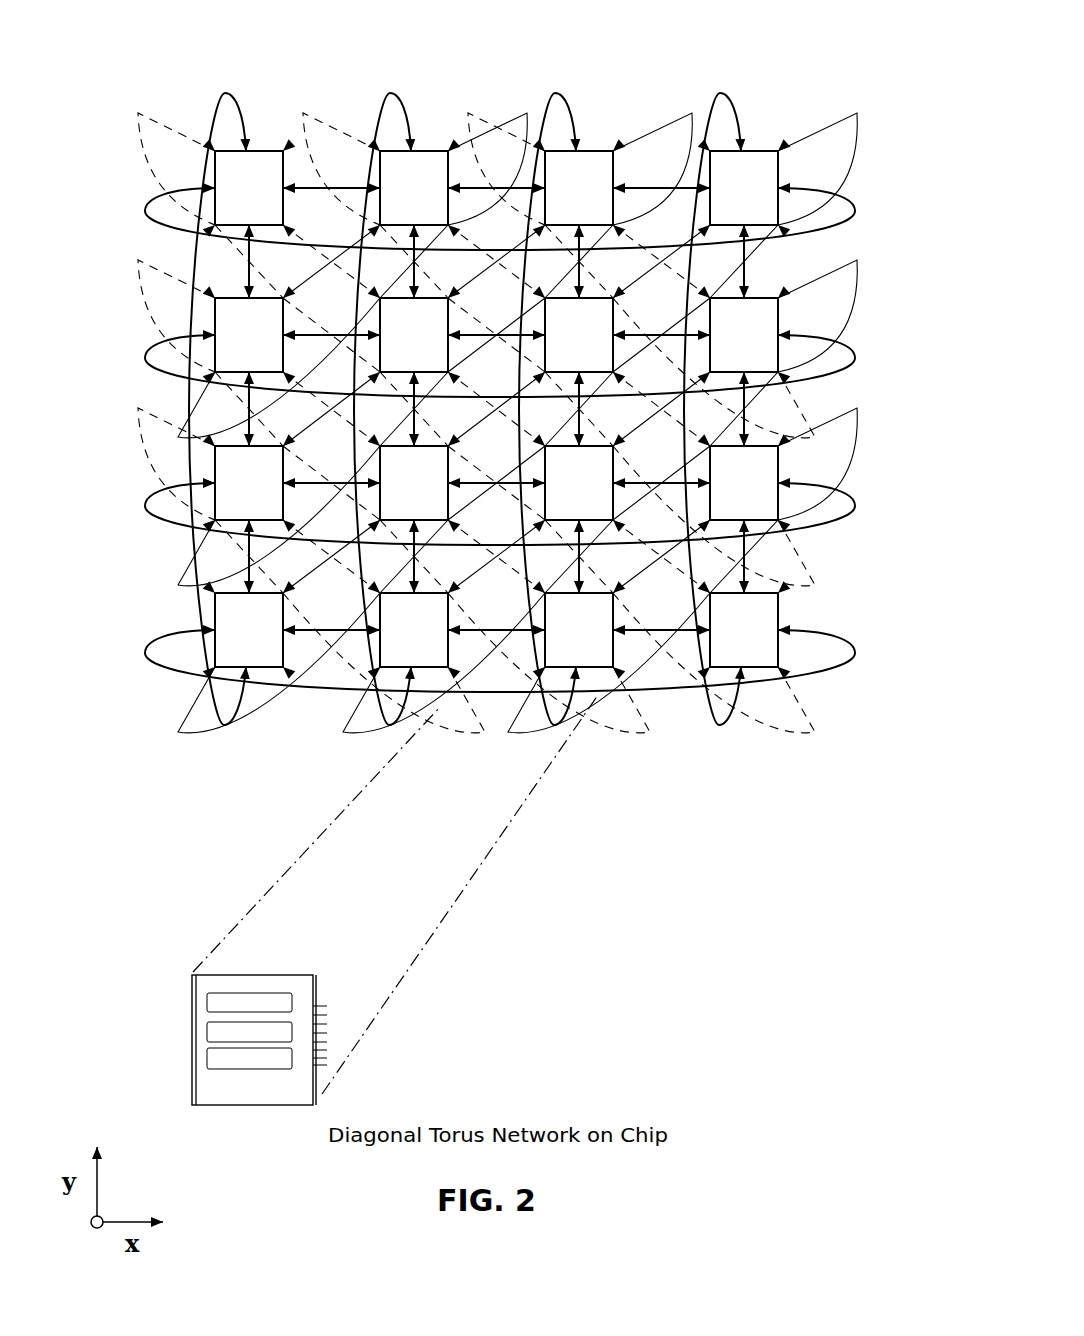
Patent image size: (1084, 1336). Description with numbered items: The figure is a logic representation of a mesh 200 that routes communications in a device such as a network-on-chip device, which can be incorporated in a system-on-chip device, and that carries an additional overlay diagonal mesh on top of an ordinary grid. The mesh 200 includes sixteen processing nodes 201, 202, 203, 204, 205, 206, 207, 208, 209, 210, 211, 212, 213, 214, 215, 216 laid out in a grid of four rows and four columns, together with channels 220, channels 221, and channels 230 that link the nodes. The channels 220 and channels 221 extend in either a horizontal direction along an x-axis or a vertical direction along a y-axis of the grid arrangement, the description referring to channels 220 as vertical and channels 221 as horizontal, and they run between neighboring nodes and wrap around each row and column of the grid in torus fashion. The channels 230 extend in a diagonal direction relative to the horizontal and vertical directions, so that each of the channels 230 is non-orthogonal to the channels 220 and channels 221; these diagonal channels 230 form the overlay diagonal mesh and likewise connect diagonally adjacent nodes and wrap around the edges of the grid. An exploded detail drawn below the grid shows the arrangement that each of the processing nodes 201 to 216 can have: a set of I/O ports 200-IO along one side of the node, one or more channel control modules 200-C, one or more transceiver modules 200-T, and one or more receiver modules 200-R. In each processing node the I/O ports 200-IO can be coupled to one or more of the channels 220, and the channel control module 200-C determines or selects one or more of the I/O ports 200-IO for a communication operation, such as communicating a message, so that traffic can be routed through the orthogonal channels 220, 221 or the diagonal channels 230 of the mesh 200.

The mesh 200 is at (889, 56).
The processing node 201 is at (249, 188).
The processing node 202 is at (414, 188).
The processing node 203 is at (579, 188).
The processing node 204 is at (744, 188).
The processing node 205 is at (249, 335).
The processing node 206 is at (414, 335).
The processing node 207 is at (579, 335).
The processing node 208 is at (744, 335).
The processing node 209 is at (249, 483).
The processing node 210 is at (414, 483).
The processing node 211 is at (579, 483).
The processing node 212 is at (744, 483).
The processing node 213 is at (249, 630).
The processing node 214 is at (414, 630).
The processing node 215 is at (579, 630).
The processing node 216 is at (744, 630).
The channels 220 is at (848, 210).
The channels 221 is at (249, 293).
The channels 230 is at (852, 114).
The I/O ports 200-IO is at (314, 1005).
The channel control module 200-C is at (249, 1002).
The transceiver module 200-T is at (249, 1032).
The receiver module 200-R is at (249, 1058).